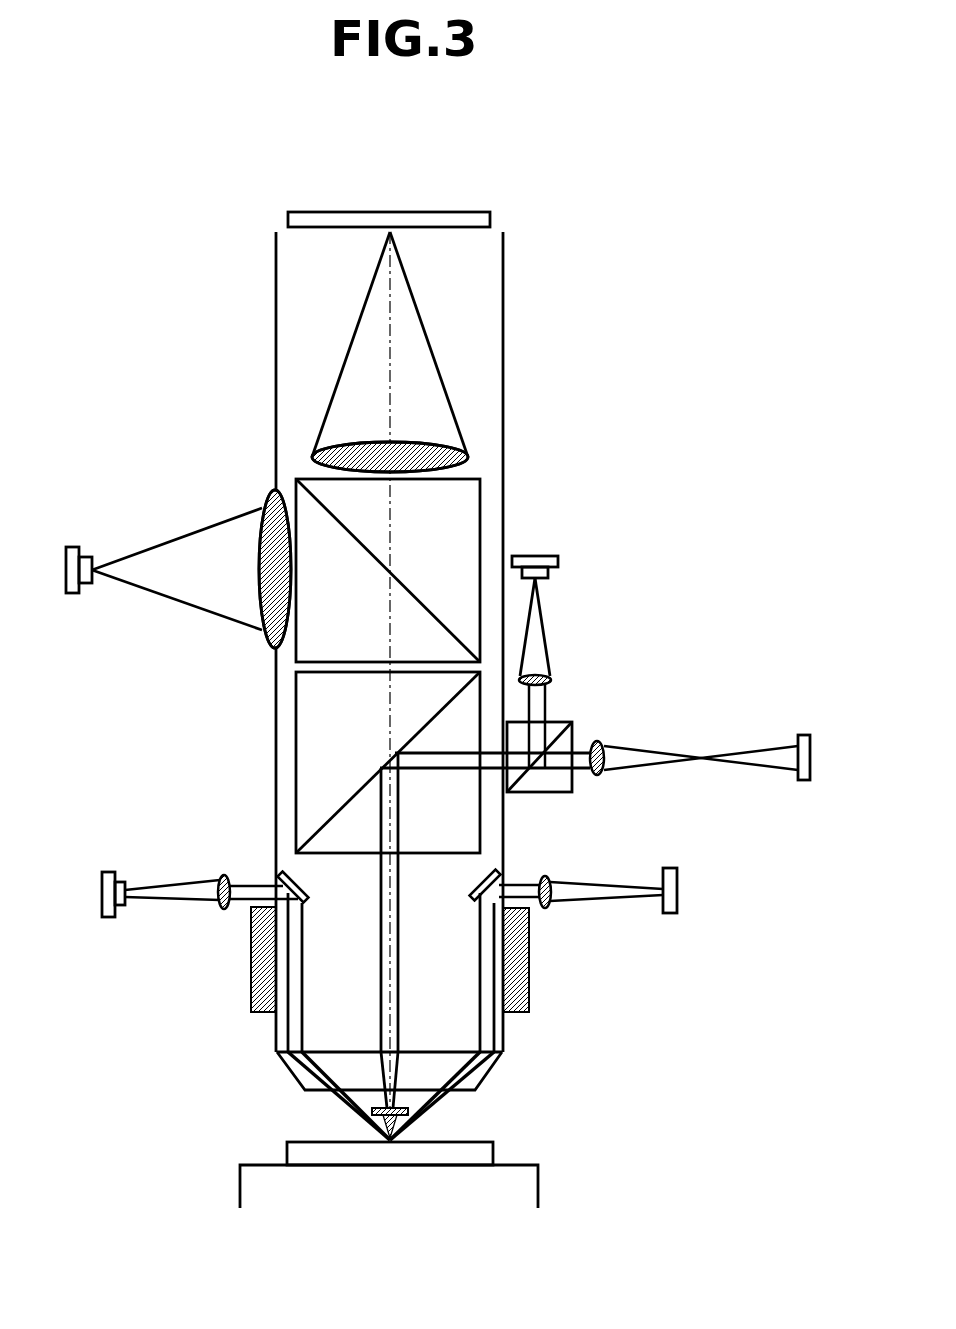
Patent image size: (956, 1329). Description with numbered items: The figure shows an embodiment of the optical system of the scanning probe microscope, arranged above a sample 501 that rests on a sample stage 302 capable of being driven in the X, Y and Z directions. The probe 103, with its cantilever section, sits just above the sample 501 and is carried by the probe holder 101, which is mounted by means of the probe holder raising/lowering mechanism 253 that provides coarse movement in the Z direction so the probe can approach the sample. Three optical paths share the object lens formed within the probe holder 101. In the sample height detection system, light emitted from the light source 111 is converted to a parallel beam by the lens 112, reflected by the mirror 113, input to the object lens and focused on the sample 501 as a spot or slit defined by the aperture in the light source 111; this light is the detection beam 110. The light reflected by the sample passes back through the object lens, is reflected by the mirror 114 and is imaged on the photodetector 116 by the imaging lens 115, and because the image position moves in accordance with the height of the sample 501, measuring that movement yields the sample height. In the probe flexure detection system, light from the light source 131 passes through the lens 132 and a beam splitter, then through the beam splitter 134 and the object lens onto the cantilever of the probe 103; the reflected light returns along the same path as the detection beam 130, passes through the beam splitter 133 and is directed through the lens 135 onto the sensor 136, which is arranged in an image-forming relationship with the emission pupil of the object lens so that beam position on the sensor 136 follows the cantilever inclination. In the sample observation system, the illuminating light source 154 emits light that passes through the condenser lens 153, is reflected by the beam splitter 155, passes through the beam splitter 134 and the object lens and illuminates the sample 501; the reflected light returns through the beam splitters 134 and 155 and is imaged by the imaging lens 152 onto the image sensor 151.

The image sensor 151 is at (492, 219).
The imaging lens 152 is at (470, 457).
The condenser lens 153 is at (262, 496).
The illuminating light source 154 is at (70, 547).
The beam splitter 155 is at (482, 506).
The light source 131 is at (560, 560).
The lens 132 is at (560, 667).
The beam splitter 133 is at (576, 730).
The beam splitter 134 is at (296, 705).
The lens 135 is at (602, 742).
The sensor 136 is at (807, 735).
The light source 111 is at (108, 872).
The lens 112 is at (222, 876).
The mirror 113 is at (282, 872).
The mirror 114 is at (493, 870).
The imaging lens 115 is at (548, 876).
The photodetector 116 is at (675, 868).
The detection beam 110 is at (293, 967).
The probe holder raising/lowering mechanism 253 is at (529, 970).
The probe holder 101 is at (277, 1050).
The detection beam 130 is at (398, 1025).
The probe 103 is at (372, 1112).
The sample 501 is at (287, 1150).
The sample stage 302 is at (240, 1194).